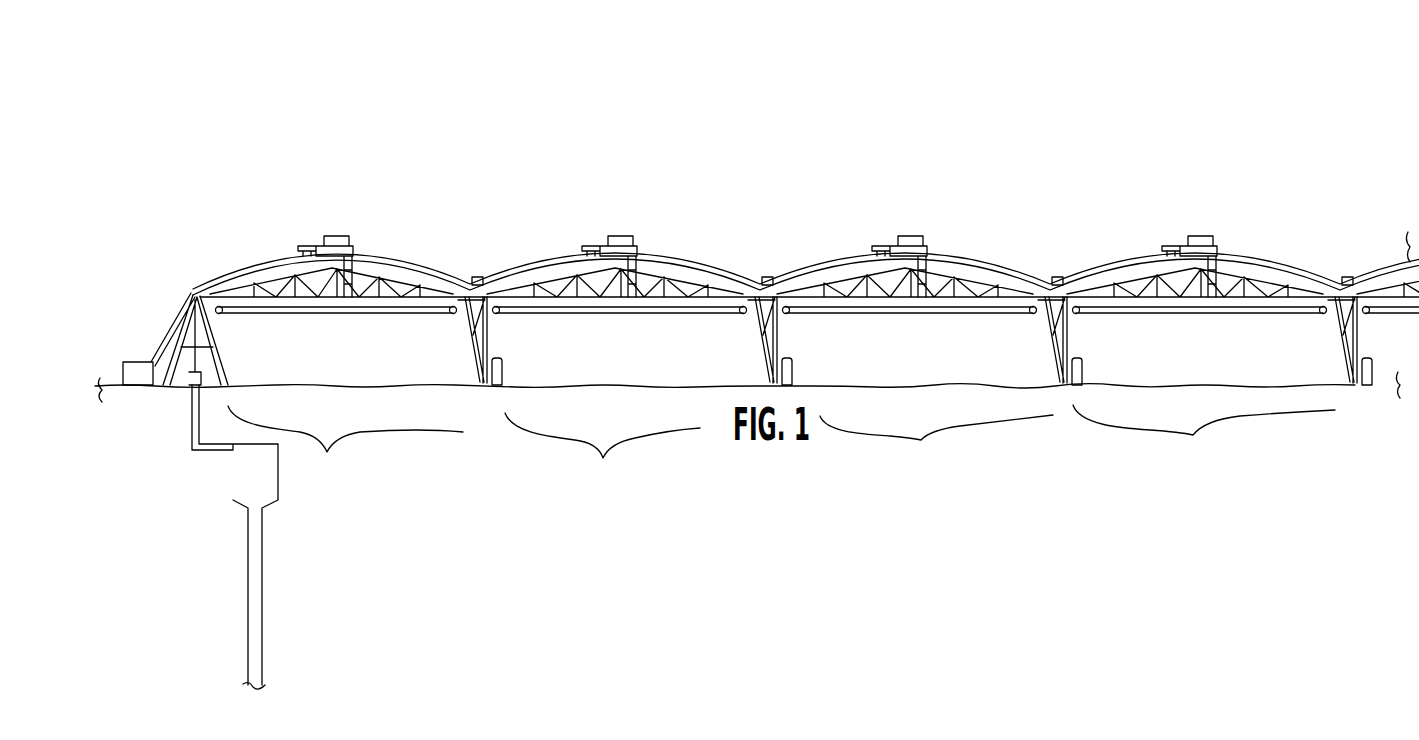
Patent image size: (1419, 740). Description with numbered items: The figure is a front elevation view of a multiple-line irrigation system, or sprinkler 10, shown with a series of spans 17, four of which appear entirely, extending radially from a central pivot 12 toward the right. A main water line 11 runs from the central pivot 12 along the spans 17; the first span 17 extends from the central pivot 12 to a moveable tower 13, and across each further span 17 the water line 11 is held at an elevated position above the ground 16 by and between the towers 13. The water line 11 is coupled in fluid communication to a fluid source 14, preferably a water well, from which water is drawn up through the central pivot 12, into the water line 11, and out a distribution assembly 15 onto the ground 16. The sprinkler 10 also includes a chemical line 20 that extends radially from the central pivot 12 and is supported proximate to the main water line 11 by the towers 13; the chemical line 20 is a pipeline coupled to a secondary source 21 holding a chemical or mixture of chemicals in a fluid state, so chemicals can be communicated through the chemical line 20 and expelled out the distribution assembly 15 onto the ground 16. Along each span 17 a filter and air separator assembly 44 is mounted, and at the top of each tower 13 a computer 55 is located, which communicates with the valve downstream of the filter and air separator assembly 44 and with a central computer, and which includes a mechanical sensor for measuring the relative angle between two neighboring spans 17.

The multiple-line irrigation system 10 is at (1140, 65).
The main water line 11 is at (419, 272).
The central pivot 12 is at (223, 367).
The moveable tower 13 is at (488, 354).
The fluid source 14 is at (262, 590).
The distribution assembly 15 is at (363, 316).
The ground 16 is at (912, 386).
The span 17 is at (781, 445).
The chemical line 20 is at (376, 261).
The secondary source 21 is at (120, 370).
The filter and air separator assembly 44 is at (348, 246).
The computer 55 is at (478, 277).